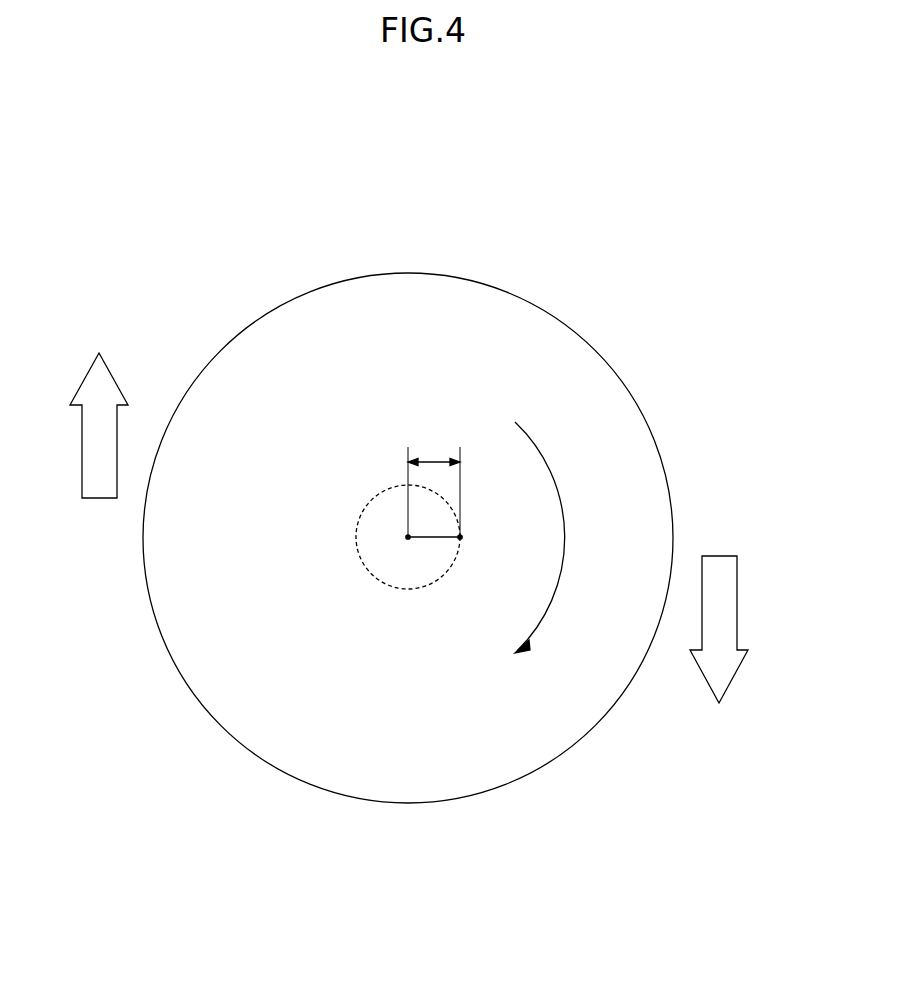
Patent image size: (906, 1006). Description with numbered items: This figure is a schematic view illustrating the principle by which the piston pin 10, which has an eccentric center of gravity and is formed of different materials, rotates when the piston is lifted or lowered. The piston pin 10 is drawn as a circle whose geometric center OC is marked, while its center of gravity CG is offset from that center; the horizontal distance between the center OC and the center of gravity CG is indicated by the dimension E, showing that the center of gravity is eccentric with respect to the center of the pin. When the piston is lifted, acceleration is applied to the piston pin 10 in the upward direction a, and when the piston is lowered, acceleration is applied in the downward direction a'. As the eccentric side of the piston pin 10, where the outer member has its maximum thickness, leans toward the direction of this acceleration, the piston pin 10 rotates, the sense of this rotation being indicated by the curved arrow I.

The piston pin 10 is at (553, 313).
The center of the piston pin OC is at (408, 537).
The center of gravity CG is at (460, 537).
The eccentricity distance E is at (434, 478).
The rotation direction I is at (553, 537).
The direction A a is at (86, 425).
The direction A' a' is at (730, 629).